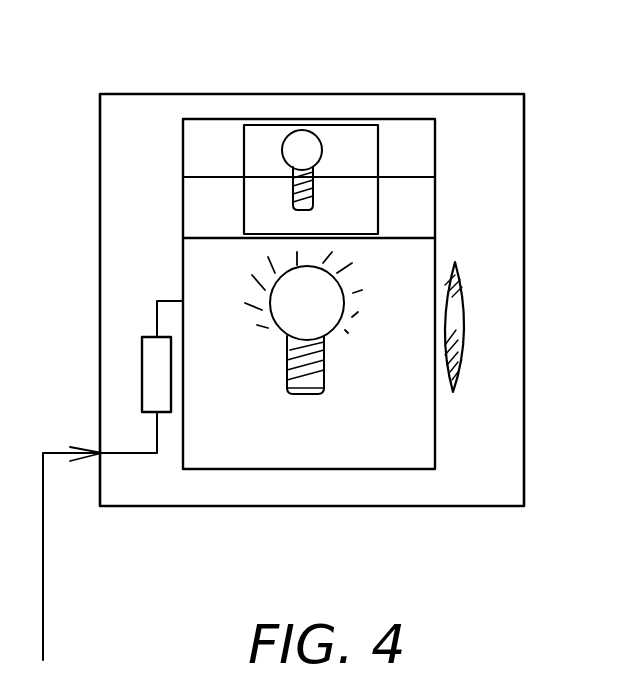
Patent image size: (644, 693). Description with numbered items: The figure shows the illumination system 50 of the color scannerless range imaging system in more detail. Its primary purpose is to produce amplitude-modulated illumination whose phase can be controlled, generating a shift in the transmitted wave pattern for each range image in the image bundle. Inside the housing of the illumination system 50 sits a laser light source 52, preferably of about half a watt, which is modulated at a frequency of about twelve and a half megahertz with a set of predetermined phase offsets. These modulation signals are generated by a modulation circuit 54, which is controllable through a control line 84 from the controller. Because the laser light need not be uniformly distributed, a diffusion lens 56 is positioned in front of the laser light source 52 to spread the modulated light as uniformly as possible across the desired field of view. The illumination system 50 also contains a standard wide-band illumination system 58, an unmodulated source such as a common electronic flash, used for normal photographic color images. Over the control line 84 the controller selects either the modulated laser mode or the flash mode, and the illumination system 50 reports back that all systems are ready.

The illumination system 50 is at (524, 378).
The laser light source 52 is at (322, 330).
The modulation circuit 54 is at (150, 370).
The diffusion lens 56 is at (461, 309).
The standard wide-band illumination system 58 is at (313, 153).
The control line 84 is at (43, 595).